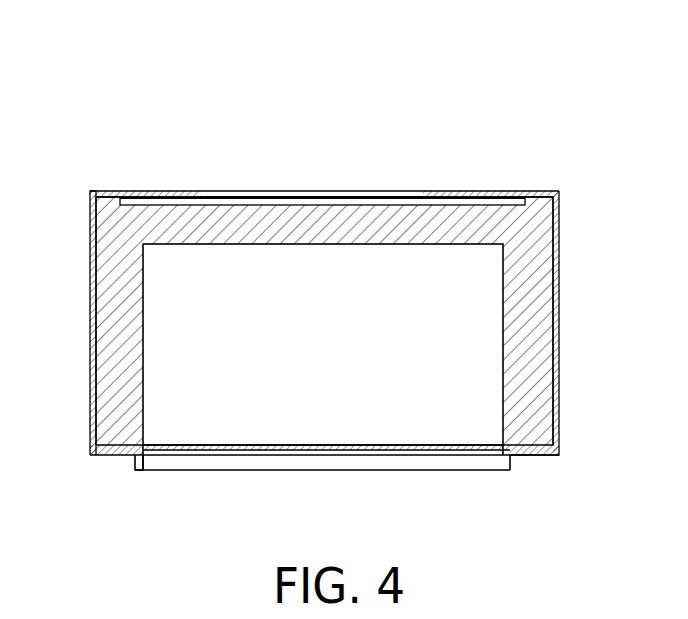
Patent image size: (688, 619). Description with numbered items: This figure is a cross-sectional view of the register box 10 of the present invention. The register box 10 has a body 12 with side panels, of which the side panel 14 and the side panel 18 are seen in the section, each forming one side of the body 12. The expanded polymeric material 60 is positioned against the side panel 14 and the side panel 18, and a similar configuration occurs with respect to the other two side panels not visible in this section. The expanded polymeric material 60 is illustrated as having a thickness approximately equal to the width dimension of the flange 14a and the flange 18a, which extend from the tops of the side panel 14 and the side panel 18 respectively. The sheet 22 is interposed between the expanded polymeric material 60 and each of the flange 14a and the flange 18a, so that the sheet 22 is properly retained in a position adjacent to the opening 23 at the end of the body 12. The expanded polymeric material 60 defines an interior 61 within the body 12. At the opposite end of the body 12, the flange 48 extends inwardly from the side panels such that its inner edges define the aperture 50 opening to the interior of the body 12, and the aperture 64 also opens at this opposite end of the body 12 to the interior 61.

The register box 10 is at (533, 60).
The body 12 is at (560, 262).
The side panel 14 is at (560, 340).
The flange 14a is at (485, 191).
The side panel 18 is at (90, 325).
The flange 18a is at (138, 191).
The sheet 22 is at (283, 200).
The opening 23 is at (237, 191).
The flange 48 is at (537, 455).
The aperture 50 is at (145, 463).
The expanded polymeric material 60 is at (188, 238).
The interior 61 is at (353, 338).
The aperture 64 is at (315, 458).